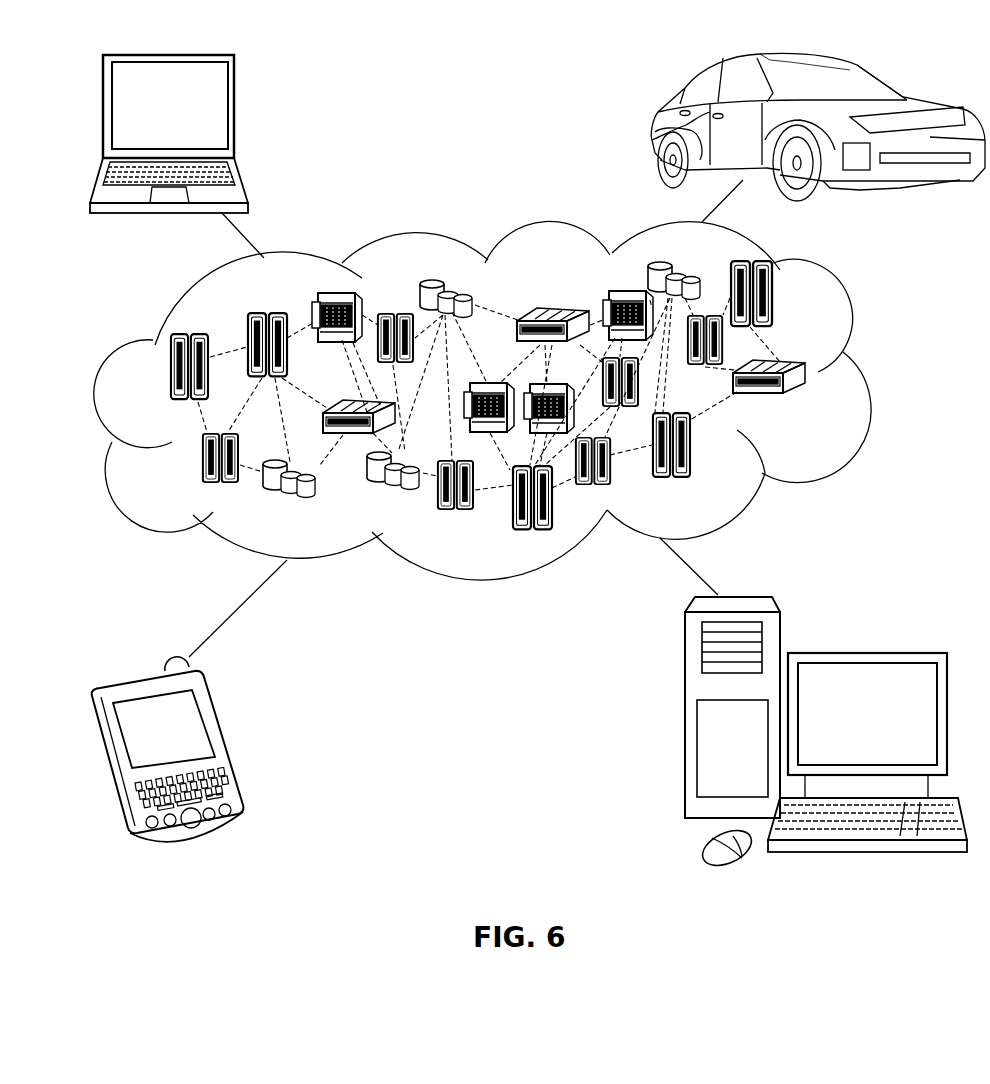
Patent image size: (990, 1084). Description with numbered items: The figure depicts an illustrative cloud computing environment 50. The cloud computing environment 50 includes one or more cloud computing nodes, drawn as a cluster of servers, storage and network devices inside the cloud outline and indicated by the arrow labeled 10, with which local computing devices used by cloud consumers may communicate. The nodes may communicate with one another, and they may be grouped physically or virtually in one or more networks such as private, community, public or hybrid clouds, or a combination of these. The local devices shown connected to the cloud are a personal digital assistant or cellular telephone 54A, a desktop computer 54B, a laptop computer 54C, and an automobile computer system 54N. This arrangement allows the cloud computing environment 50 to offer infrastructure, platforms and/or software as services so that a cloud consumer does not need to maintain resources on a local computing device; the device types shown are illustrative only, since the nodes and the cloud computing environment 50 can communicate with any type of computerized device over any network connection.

The cloud computing nodes 10 is at (807, 403).
The cloud computing environment 50 is at (863, 373).
The personal digital assistant or cellular telephone 54A is at (228, 741).
The desktop computer 54B is at (863, 652).
The laptop computer 54C is at (237, 113).
The automobile computer system 54N is at (652, 131).